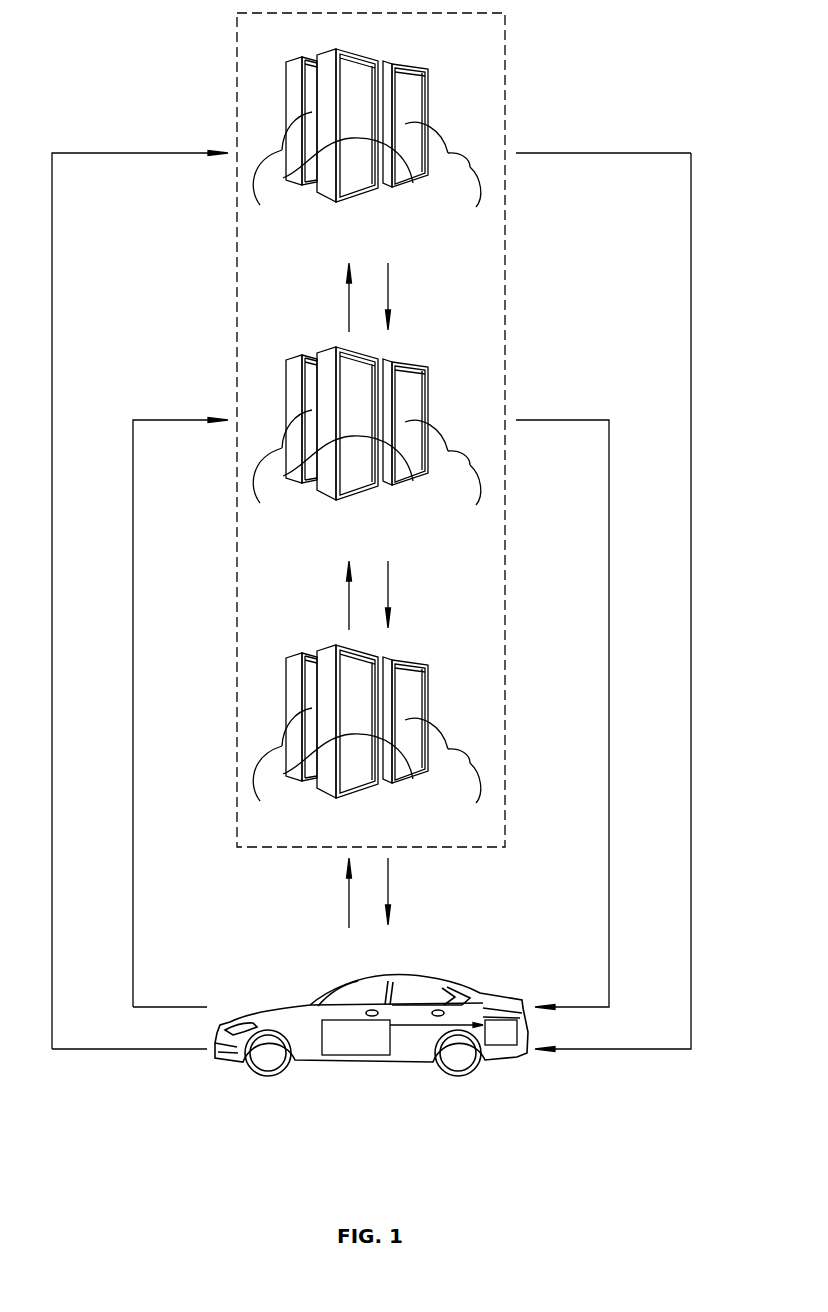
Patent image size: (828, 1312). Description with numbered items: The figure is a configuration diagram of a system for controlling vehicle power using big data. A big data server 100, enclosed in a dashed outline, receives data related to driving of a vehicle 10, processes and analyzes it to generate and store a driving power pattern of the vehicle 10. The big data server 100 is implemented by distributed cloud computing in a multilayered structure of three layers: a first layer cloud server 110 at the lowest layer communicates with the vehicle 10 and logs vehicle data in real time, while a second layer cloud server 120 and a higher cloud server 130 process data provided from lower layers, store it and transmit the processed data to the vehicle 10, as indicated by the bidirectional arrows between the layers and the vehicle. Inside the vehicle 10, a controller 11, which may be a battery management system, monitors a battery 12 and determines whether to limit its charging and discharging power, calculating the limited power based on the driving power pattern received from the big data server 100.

The big data server 100 is at (505, 30).
The cloud server 130 is at (415, 102).
The second layer cloud server 120 is at (415, 400).
The first layer cloud server 110 is at (415, 698).
The vehicle 10 is at (430, 982).
The controller 11 is at (357, 1055).
The battery 12 is at (503, 1045).